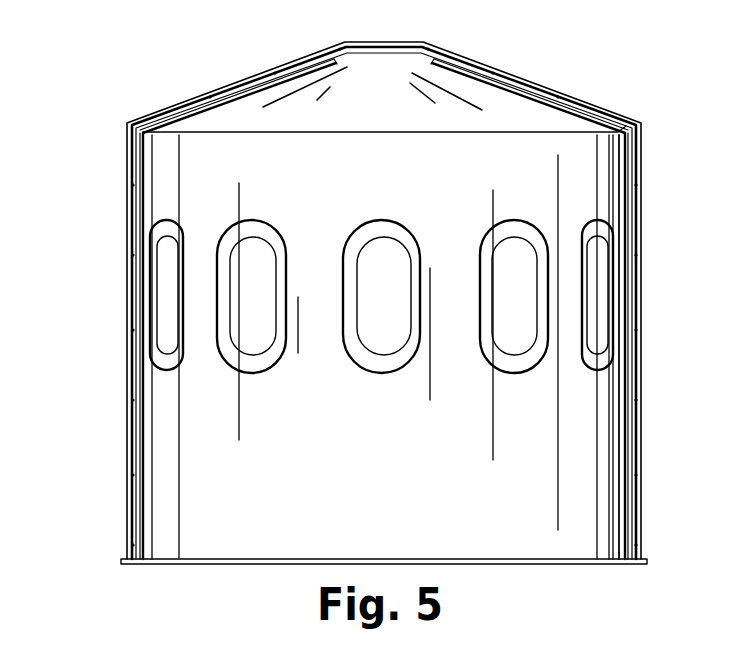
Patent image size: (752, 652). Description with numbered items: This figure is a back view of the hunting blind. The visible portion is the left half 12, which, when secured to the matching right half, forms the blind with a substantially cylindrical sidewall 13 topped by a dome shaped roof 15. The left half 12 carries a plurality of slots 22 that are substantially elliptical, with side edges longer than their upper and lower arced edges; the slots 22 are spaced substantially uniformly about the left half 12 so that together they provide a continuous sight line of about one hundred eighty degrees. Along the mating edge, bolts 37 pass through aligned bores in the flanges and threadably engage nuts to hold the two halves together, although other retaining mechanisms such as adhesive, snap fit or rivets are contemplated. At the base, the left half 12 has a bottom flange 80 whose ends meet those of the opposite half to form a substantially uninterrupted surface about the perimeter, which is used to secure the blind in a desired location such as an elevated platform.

The left half 12 is at (342, 318).
The sidewall 13 is at (512, 535).
The roof 15 is at (507, 100).
The slots 22 is at (257, 258).
The bolts 37 is at (133, 329).
The bottom flange 80 is at (162, 562).